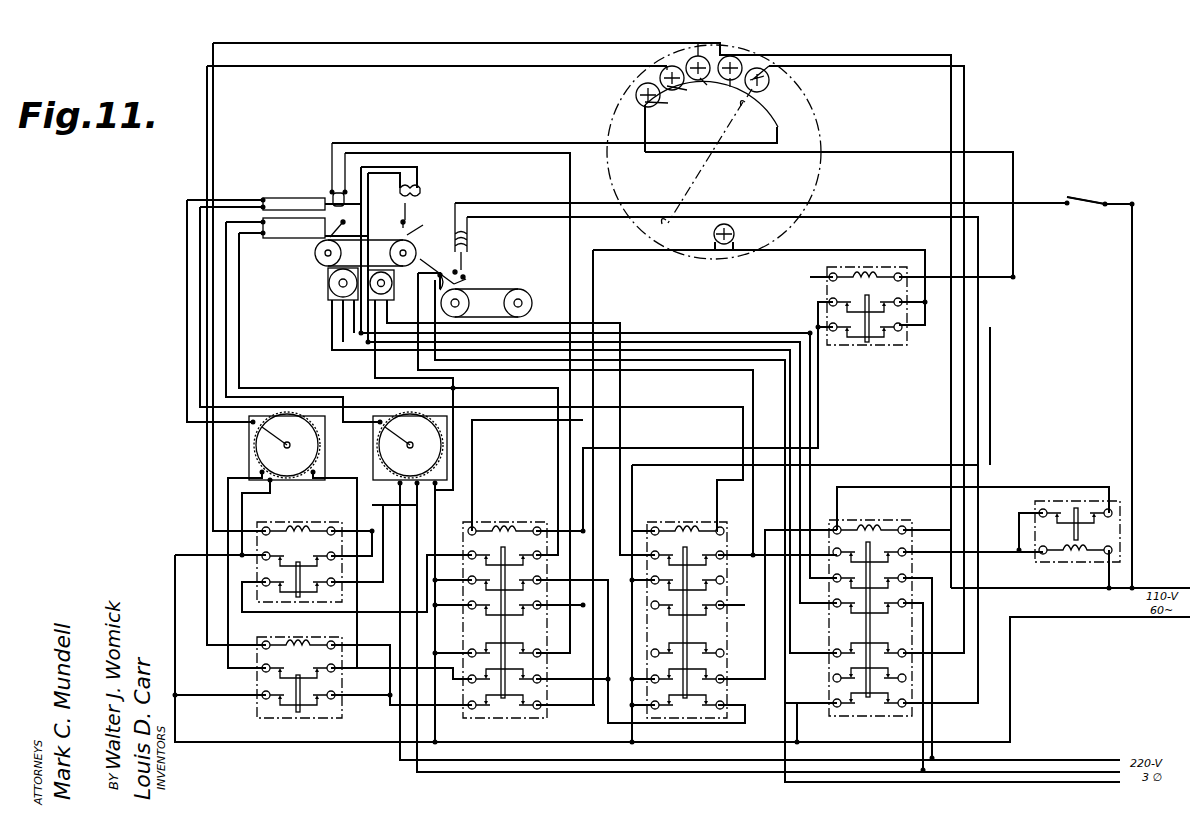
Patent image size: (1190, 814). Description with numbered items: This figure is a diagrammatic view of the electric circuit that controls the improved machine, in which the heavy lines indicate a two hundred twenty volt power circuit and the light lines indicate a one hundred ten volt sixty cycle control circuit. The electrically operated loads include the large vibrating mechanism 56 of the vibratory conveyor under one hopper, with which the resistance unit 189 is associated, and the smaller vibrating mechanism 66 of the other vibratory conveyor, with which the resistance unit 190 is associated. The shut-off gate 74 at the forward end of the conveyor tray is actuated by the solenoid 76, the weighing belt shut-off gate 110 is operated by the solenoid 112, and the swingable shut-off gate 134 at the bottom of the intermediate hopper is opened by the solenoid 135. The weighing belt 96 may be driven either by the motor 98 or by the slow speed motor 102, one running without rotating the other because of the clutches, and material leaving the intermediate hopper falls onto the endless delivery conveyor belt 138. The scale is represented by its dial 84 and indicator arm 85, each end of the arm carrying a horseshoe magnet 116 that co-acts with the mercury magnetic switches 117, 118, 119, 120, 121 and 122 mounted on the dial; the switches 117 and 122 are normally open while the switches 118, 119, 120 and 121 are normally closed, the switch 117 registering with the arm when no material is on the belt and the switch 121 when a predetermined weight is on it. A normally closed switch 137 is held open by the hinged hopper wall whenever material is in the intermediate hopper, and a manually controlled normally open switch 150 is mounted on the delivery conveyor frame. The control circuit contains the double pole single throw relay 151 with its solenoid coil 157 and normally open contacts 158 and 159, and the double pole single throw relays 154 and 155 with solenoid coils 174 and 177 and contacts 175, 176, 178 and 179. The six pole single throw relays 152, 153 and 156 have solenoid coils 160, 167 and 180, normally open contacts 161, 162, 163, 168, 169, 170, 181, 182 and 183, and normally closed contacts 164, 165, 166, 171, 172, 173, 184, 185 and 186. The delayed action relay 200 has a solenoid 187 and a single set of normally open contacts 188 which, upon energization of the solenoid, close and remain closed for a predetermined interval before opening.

The vibrating mechanism 56 is at (282, 238).
The vibrating mechanism 66 is at (270, 198).
The shut-off gate 74 is at (338, 230).
The solenoid 76 is at (346, 174).
The dial 84 is at (822, 104).
The indicator arm 85 is at (700, 175).
The weighing belt 96 is at (365, 253).
The motor 98 is at (328, 285).
The slow speed motor 102 is at (390, 277).
The weighing belt shut-off gate 110 is at (420, 228).
The solenoid 112 is at (400, 196).
The horseshoe magnet 116 is at (711, 155).
The mercury magnetic switch 117 is at (766, 70).
The mercury magnetic switch 118 is at (730, 55).
The mercury magnetic switch 119 is at (704, 52).
The mercury magnetic switch 120 is at (667, 66).
The mercury magnetic switch 121 is at (636, 94).
The mercury magnetic switch 122 is at (736, 233).
The shut-off gate 134 is at (470, 278).
The solenoid 135 is at (453, 249).
The electrical switch 137 is at (430, 290).
The delivery conveyor belt 138 is at (486, 303).
The electrical switch 150 is at (1080, 197).
The double pole single throw relay 151 is at (890, 345).
The six pole single throw relay 152 is at (490, 522).
The six pole single throw relay 153 is at (660, 520).
The double pole single throw relay 154 is at (268, 522).
The double pole single throw relay 155 is at (272, 637).
The six pole single throw relay 156 is at (900, 520).
The solenoid coil 157 is at (870, 270).
The normally open set of contacts 158 is at (878, 302).
The normally open set of contacts 159 is at (878, 327).
The solenoid coil 160 is at (504, 537).
The normally open set of contacts 161 is at (505, 550).
The normally open set of contacts 162 is at (520, 578).
The normally open set of contacts 163 is at (520, 604).
The normally closed set of contacts 164 is at (490, 642).
The normally closed set of contacts 165 is at (490, 668).
The normally closed set of contacts 166 is at (490, 694).
The solenoid coil 167 is at (687, 537).
The normally open contacts 168 is at (687, 550).
The normally open contacts 169 is at (687, 575).
The normally open contacts 170 is at (687, 601).
The normally closed contacts 171 is at (682, 642).
The normally closed contacts 172 is at (676, 668).
The normally closed contacts 173 is at (676, 694).
The solenoid coil 174 is at (300, 528).
The set of contacts 175 is at (282, 558).
The set of contacts 176 is at (318, 583).
The solenoid coil 177 is at (300, 642).
The set of contacts 178 is at (282, 670).
The set of contacts 179 is at (316, 696).
The solenoid coil 180 is at (869, 537).
The normally open contacts 181 is at (870, 549).
The normally open contacts 182 is at (882, 577).
The normally open contacts 183 is at (882, 603).
The normally closed contacts 184 is at (860, 642).
The normally closed contacts 185 is at (860, 668).
The normally closed contacts 186 is at (860, 694).
The solenoid 187 is at (1075, 556).
The normally open contacts 188 is at (1062, 530).
The resistance unit 189 is at (376, 453).
The resistance unit 190 is at (252, 453).
The delayed action relay 200 is at (1122, 522).